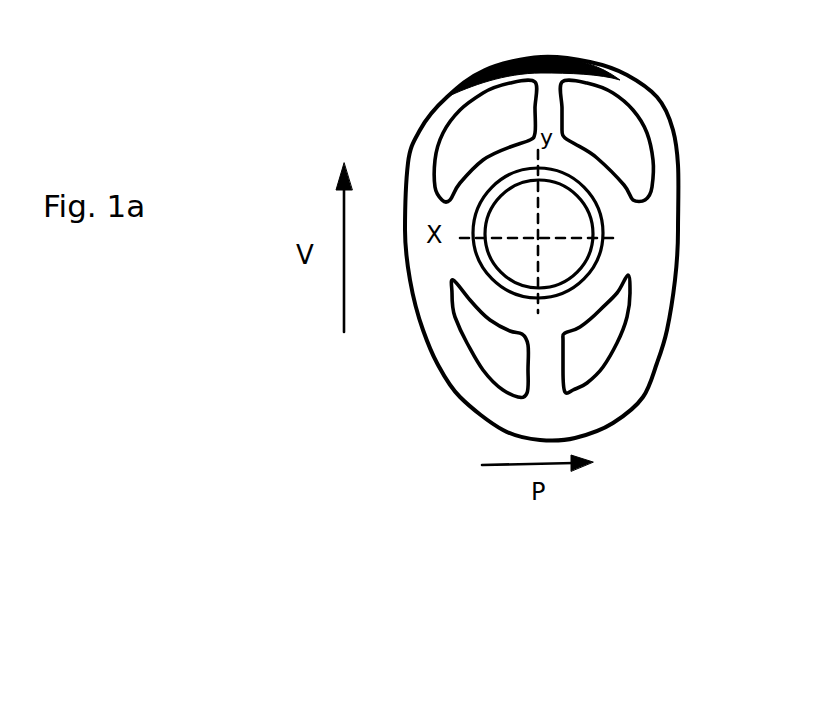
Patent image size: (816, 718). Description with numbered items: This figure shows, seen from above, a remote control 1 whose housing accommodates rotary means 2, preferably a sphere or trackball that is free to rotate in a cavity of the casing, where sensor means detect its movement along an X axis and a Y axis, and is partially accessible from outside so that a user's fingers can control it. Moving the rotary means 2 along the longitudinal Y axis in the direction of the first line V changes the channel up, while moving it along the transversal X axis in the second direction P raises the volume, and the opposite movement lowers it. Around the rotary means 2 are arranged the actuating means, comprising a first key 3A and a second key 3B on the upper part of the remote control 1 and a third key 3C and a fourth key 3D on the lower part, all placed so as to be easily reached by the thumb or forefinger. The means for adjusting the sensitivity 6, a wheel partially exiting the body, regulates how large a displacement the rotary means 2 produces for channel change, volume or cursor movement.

The remote control 1 is at (439, 259).
The rotary means 2 is at (583, 231).
The first key 3A is at (440, 109).
The second key 3B is at (620, 107).
The third key 3C is at (429, 410).
The fourth key 3D is at (613, 421).
The means for adjusting the sensitivity 6 is at (533, 51).